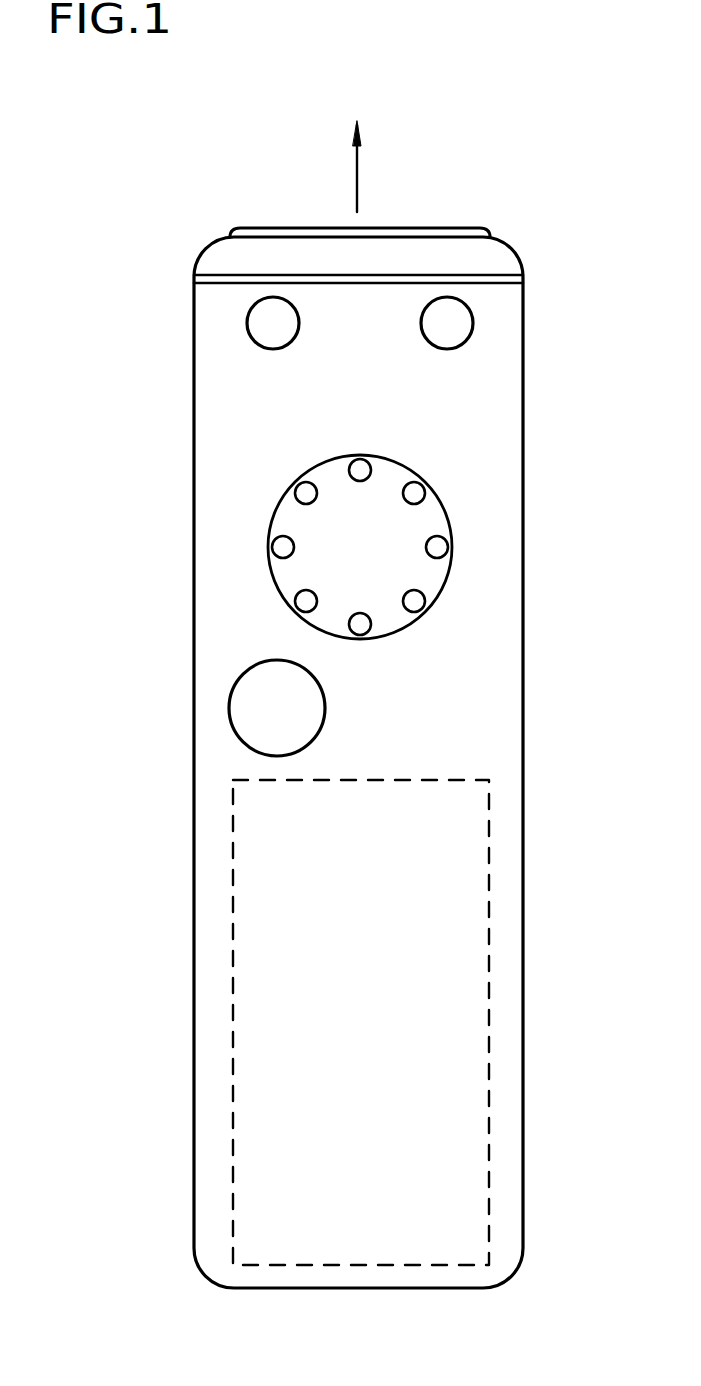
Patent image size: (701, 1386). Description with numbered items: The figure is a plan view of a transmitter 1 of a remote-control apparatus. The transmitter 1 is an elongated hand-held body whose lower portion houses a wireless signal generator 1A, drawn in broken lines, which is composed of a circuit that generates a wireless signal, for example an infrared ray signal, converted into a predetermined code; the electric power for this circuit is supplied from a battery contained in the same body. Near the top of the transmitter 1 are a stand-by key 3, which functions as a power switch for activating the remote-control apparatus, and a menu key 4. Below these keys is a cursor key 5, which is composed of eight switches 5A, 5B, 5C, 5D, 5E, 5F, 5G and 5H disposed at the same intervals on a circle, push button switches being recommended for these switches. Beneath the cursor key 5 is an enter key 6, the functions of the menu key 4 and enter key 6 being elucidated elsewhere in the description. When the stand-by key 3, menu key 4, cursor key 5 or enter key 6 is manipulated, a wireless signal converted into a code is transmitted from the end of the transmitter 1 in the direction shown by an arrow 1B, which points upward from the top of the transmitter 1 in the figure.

The transmitter 1 is at (194, 883).
The wireless signal generator 1A is at (489, 996).
The arrow 1B is at (359, 177).
The stand-by key 3 is at (247, 320).
The menu key 4 is at (473, 315).
The cursor key 5 is at (448, 515).
The switch 5A is at (372, 465).
The switch 5B is at (428, 486).
The switch 5C is at (450, 548).
The switch 5D is at (428, 600).
The switch 5E is at (373, 622).
The switch 5F is at (298, 596).
The switch 5G is at (276, 542).
The switch 5H is at (300, 488).
The enter key 6 is at (229, 708).